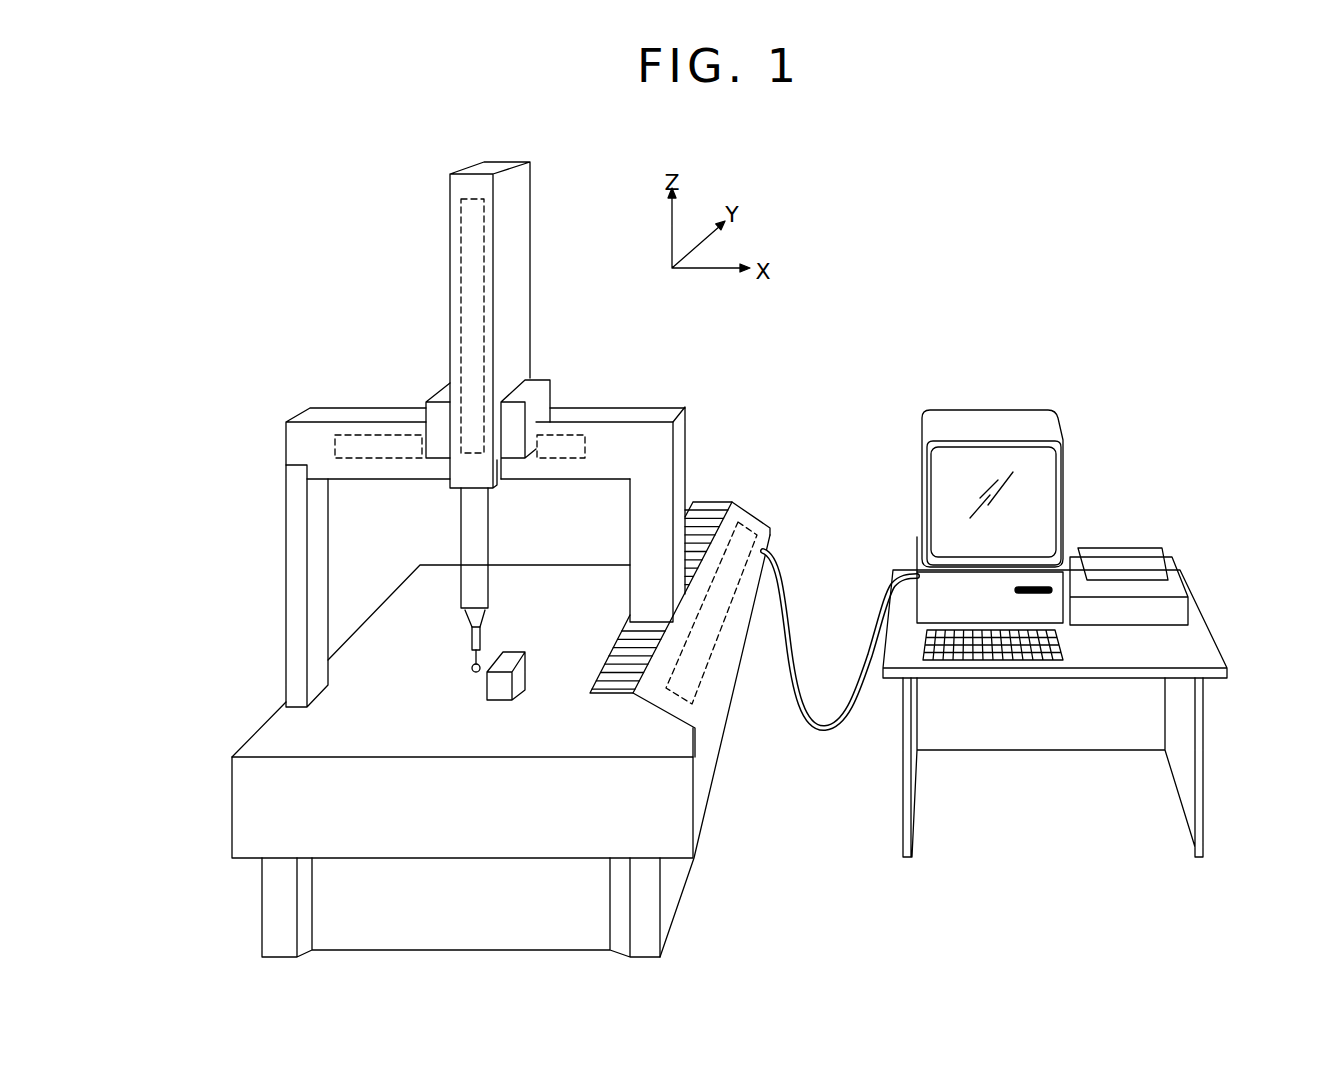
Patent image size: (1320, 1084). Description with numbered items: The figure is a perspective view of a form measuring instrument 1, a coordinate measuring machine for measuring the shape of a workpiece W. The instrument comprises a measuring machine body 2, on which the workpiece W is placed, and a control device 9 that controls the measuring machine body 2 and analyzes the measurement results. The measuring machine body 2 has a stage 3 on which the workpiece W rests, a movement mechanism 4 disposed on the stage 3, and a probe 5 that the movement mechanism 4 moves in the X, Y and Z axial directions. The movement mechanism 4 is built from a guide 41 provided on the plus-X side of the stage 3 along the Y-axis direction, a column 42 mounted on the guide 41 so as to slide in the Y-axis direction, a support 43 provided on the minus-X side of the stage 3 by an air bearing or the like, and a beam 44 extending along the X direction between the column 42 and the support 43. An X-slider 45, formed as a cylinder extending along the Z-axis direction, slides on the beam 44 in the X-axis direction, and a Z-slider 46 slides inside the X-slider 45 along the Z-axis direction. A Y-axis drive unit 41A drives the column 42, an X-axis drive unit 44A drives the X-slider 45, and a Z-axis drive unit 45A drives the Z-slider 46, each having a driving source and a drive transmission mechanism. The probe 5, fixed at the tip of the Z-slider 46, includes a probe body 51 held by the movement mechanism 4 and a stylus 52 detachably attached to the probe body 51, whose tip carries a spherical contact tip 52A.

The form measuring instrument 1 is at (345, 210).
The measuring machine body 2 is at (288, 370).
The stage 3 is at (273, 740).
The movement mechanism 4 is at (238, 577).
The probe 5 is at (450, 628).
The control device 9 is at (1122, 306).
The guide 41 is at (755, 517).
The Y-axis drive unit 41A is at (767, 547).
The column 42 is at (687, 423).
The support 43 is at (285, 490).
The beam 44 is at (363, 407).
The X-axis drive unit 44A is at (563, 433).
The X-slider 45 is at (518, 270).
The Z-axis drive unit 45A is at (468, 200).
The Z-slider 46 is at (475, 522).
The probe body 51 is at (483, 637).
The stylus 52 is at (470, 655).
The contact tip 52A is at (468, 670).
The workpiece W is at (528, 667).